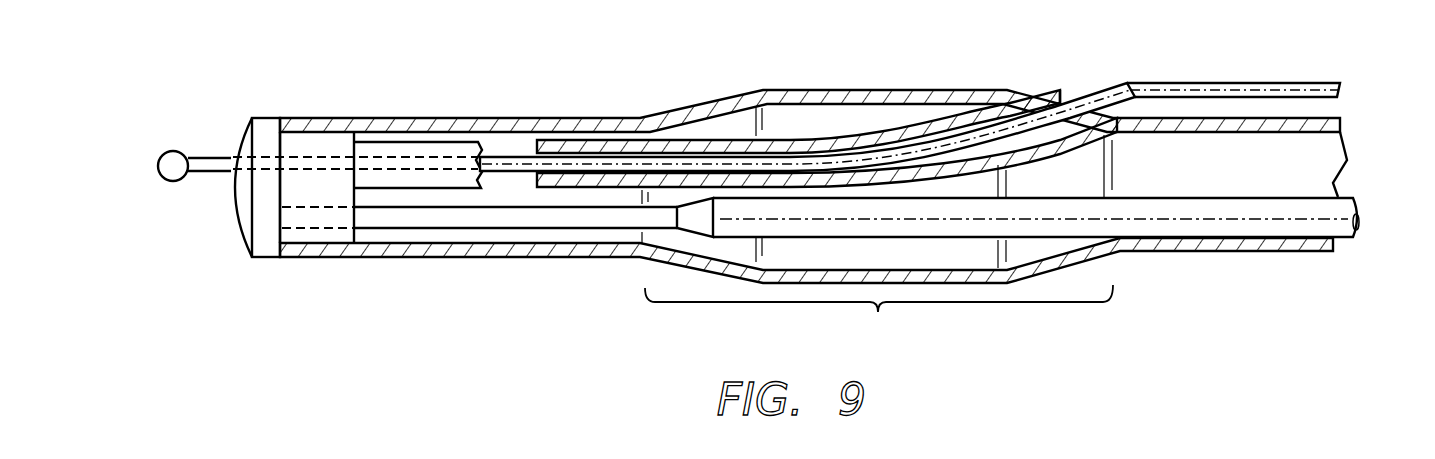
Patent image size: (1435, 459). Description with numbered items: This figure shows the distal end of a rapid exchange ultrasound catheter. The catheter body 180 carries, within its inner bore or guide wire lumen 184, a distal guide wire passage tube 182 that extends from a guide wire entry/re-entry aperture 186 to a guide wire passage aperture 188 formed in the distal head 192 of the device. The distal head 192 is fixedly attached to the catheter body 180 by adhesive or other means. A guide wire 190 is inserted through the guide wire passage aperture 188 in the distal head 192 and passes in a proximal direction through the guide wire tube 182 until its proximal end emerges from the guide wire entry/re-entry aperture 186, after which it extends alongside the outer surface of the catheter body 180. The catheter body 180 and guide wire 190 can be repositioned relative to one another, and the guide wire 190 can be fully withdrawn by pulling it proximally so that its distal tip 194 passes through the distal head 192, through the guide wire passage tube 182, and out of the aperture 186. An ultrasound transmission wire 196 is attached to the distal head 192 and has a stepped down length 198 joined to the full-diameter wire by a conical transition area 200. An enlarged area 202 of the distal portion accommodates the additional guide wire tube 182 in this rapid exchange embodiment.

The catheter body 180 is at (1330, 252).
The distal guide wire passage tube 182 is at (687, 147).
The guide wire lumen 184 is at (808, 137).
The guide wire entry/re-entry aperture 186 is at (1070, 107).
The guide wire passage aperture 188 is at (330, 157).
The guide wire 190 is at (207, 156).
The distal head 192 is at (242, 210).
The distal tip 194 is at (168, 152).
The ultrasound transmission wire 196 is at (1162, 228).
The stepped down length 198 is at (563, 220).
The conical transition area 200 is at (700, 222).
The enlarged area 202 is at (879, 317).